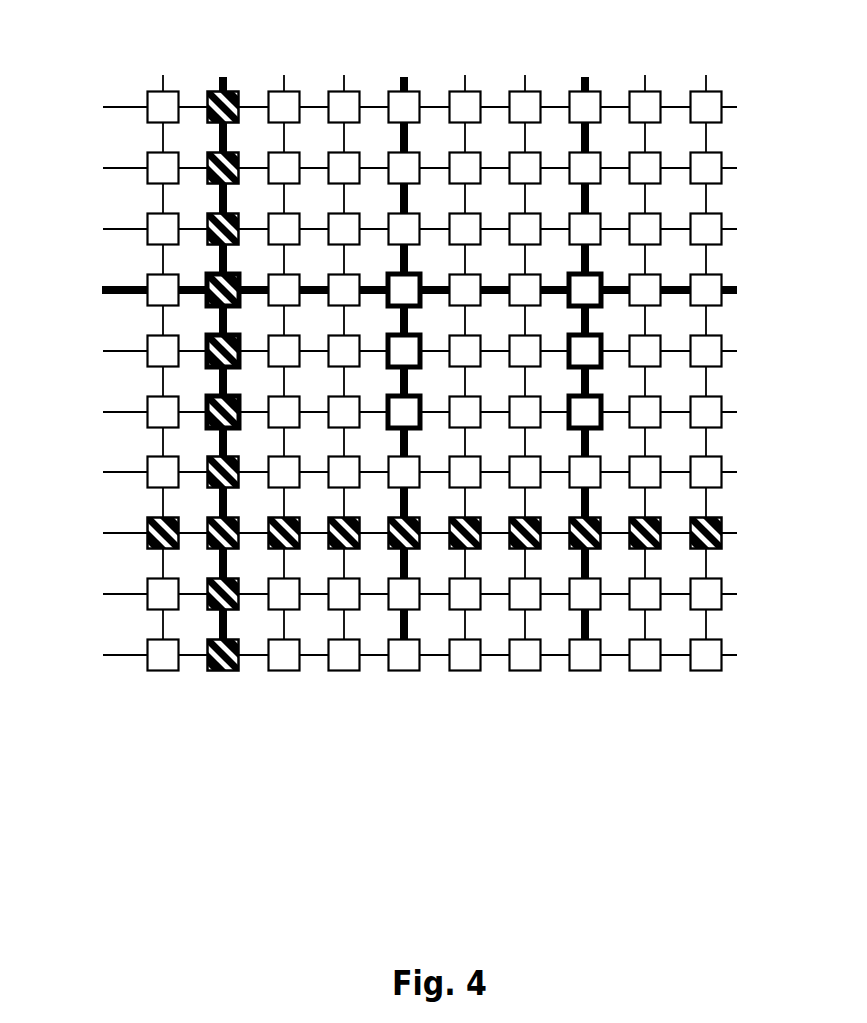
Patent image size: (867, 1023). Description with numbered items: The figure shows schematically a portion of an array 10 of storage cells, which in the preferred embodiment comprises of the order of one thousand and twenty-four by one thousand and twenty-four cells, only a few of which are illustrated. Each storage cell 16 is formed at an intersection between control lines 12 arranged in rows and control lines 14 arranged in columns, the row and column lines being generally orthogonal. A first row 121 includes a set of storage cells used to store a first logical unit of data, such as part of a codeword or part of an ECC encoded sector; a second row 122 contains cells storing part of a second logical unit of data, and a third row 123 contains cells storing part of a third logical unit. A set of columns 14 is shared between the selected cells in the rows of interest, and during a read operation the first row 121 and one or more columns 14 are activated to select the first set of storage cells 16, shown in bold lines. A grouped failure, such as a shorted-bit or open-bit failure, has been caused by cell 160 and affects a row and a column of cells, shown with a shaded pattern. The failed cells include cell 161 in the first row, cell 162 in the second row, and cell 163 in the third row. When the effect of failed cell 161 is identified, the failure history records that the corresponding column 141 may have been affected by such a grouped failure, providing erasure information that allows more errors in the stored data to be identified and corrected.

The array 10 is at (772, 662).
The control lines 12 is at (722, 169).
The first row 121 is at (737, 290).
The second row 122 is at (722, 351).
The third row 123 is at (722, 412).
The control lines 14 is at (408, 77).
The column 141 is at (226, 77).
The storage cells 16 is at (706, 107).
The cell 160 is at (207, 521).
The failed cell 161 is at (207, 276).
The failed cell 162 is at (207, 337).
The failed cell 163 is at (207, 398).